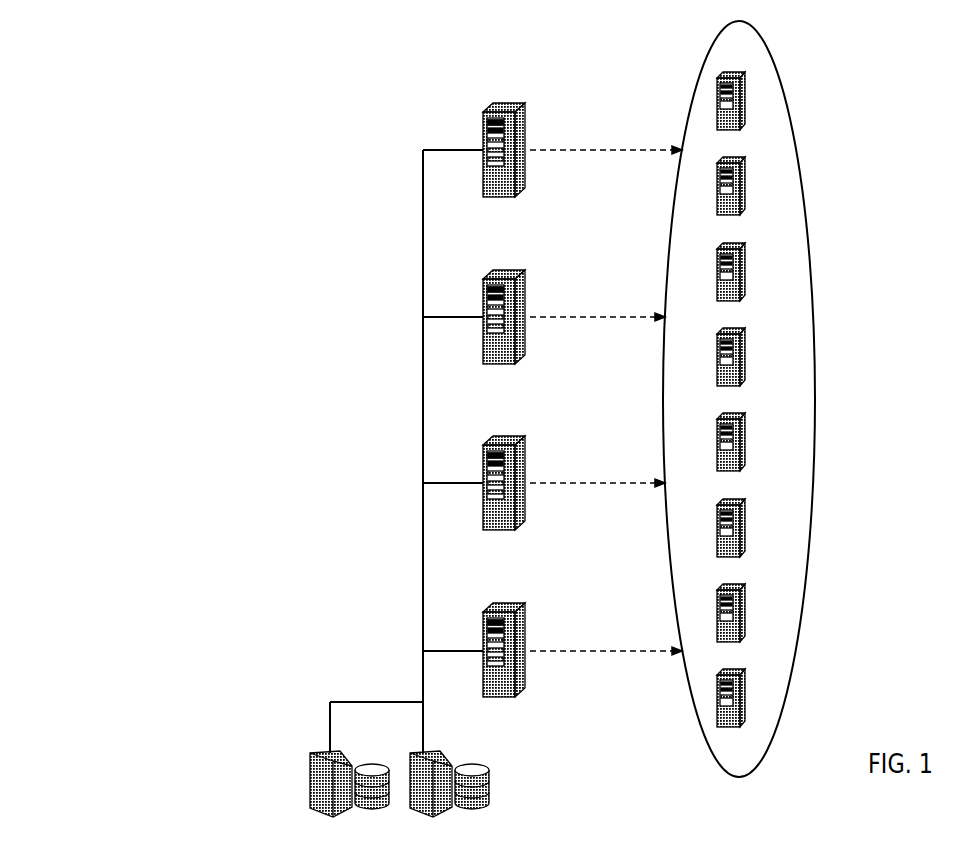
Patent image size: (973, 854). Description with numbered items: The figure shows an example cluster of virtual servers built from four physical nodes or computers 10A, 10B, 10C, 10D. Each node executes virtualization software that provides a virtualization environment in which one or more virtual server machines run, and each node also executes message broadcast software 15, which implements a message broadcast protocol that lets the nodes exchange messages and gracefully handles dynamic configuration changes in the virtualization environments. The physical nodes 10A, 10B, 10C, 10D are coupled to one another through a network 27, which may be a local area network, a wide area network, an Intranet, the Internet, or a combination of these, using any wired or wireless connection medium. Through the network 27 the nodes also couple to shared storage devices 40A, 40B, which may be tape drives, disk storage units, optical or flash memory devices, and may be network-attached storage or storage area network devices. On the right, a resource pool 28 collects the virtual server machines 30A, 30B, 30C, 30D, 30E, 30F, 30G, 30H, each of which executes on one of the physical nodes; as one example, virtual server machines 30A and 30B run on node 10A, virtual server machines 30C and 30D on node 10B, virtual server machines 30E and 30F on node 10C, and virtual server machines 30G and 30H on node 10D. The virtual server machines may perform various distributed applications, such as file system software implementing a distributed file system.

The physical node 10A is at (510, 135).
The physical node 10B is at (510, 302).
The physical node 10C is at (513, 468).
The physical node 10D is at (518, 635).
The message broadcast software 15 is at (510, 144).
The network 27 is at (421, 184).
The resource pool 28 is at (777, 62).
The virtual server machine 30A is at (749, 101).
The virtual server machine 30B is at (749, 186).
The virtual server machine 30C is at (749, 272).
The virtual server machine 30D is at (750, 357).
The virtual server machine 30E is at (748, 442).
The virtual server machine 30F is at (748, 528).
The virtual server machine 30G is at (750, 613).
The virtual server machine 30H is at (749, 698).
The shared storage device 40A is at (289, 784).
The shared storage device 40B is at (513, 784).